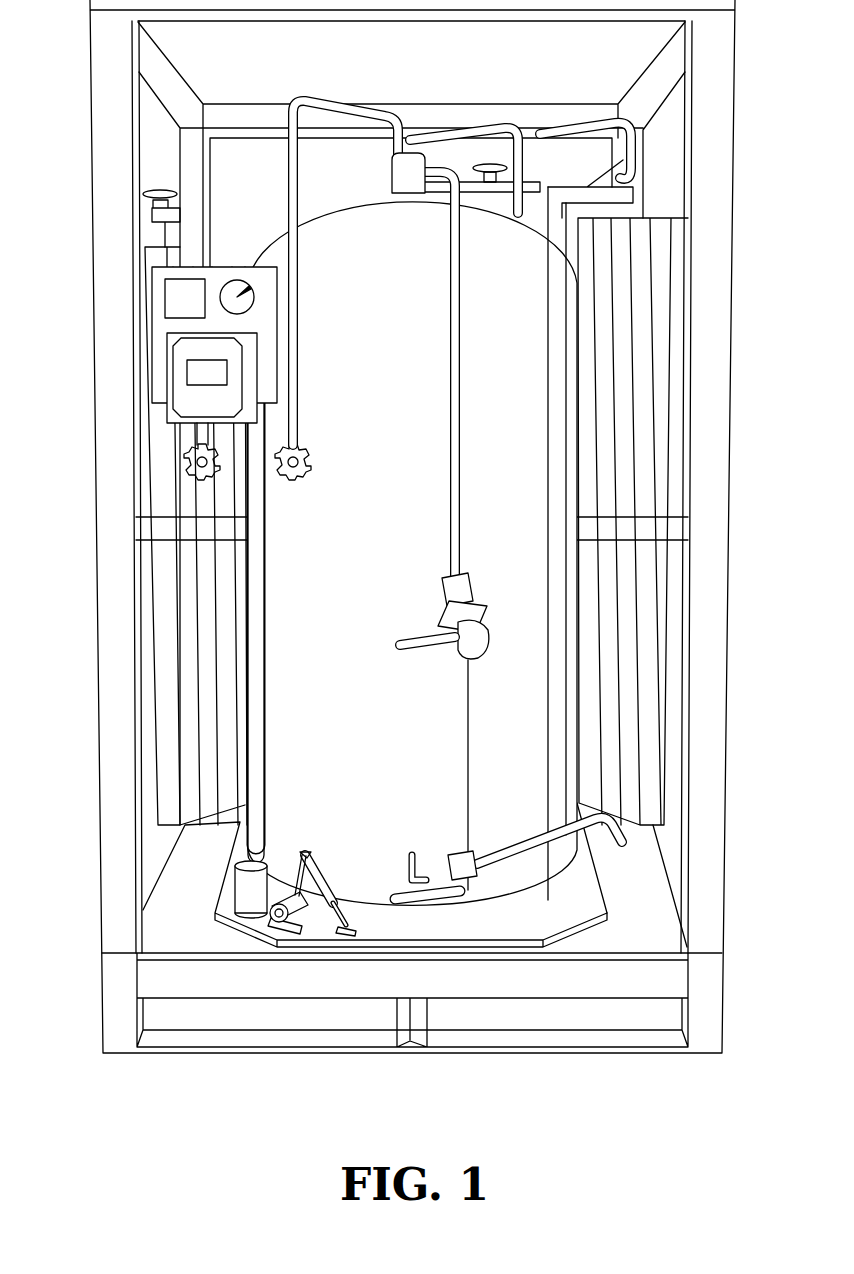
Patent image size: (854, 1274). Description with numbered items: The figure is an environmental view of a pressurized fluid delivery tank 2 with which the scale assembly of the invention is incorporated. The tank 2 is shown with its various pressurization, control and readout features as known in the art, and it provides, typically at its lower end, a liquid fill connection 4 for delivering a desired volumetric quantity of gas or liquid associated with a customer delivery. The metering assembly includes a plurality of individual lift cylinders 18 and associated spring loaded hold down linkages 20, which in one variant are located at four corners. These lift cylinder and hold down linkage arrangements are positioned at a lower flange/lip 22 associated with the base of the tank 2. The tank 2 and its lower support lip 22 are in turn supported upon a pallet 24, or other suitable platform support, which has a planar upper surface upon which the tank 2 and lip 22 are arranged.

The pressurized fluid delivery tank 2 is at (332, 627).
The liquid fill connection 4 is at (435, 888).
The lift cylinder 18 is at (228, 855).
The spring loaded hold down linkage 20 is at (332, 871).
The lower flange/lip 22 is at (263, 915).
The pallet 24 is at (180, 937).